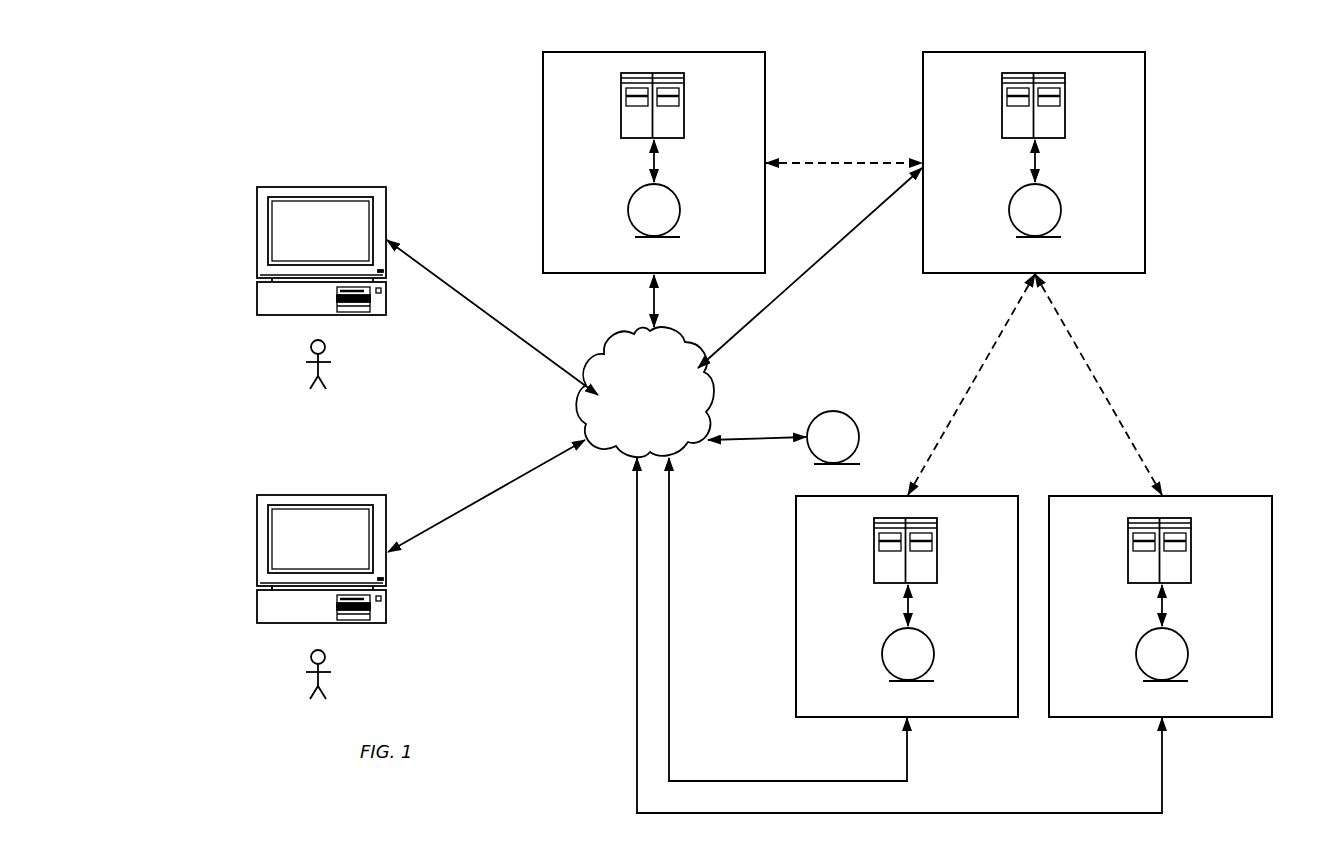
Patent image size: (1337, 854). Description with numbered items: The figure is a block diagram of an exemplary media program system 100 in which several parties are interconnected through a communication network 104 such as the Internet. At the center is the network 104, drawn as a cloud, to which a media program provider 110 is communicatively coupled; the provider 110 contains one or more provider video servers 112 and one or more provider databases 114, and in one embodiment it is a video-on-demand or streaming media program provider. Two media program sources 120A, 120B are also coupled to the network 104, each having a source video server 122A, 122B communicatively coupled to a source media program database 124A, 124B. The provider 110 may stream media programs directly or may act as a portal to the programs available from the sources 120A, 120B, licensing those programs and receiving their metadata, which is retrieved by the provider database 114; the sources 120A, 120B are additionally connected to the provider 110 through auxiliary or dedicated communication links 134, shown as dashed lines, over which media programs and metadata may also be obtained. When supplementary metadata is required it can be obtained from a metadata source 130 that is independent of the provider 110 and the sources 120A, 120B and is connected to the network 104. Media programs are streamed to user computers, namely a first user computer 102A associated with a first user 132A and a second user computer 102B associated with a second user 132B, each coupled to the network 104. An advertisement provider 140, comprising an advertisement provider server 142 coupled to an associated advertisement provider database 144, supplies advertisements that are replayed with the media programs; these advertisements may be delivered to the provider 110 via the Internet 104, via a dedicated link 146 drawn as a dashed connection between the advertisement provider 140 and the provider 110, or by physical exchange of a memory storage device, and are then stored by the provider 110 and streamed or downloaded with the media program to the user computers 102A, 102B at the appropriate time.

The media program system 100 is at (403, 82).
The first user computer 102A is at (350, 158).
The second user computer 102B is at (335, 486).
The communication network 104 is at (708, 432).
The media program provider 110 is at (1057, 162).
The provider video server 112 is at (1065, 90).
The provider database 114 is at (1061, 214).
The media program source 120A is at (918, 587).
The media program source 120B is at (1171, 587).
The source video server 122A is at (938, 542).
The source video server 122B is at (1192, 542).
The source media program database 124A is at (934, 658).
The source media program database 124B is at (1188, 658).
The metadata source 130 is at (818, 413).
The first user 132A is at (318, 397).
The second user 132B is at (318, 705).
The auxiliary communication link 134 is at (975, 370).
The advertisement provider 140 is at (659, 143).
The advertisement provider server 142 is at (684, 98).
The advertisement provider database 144 is at (680, 214).
The dedicated link 146 is at (805, 163).